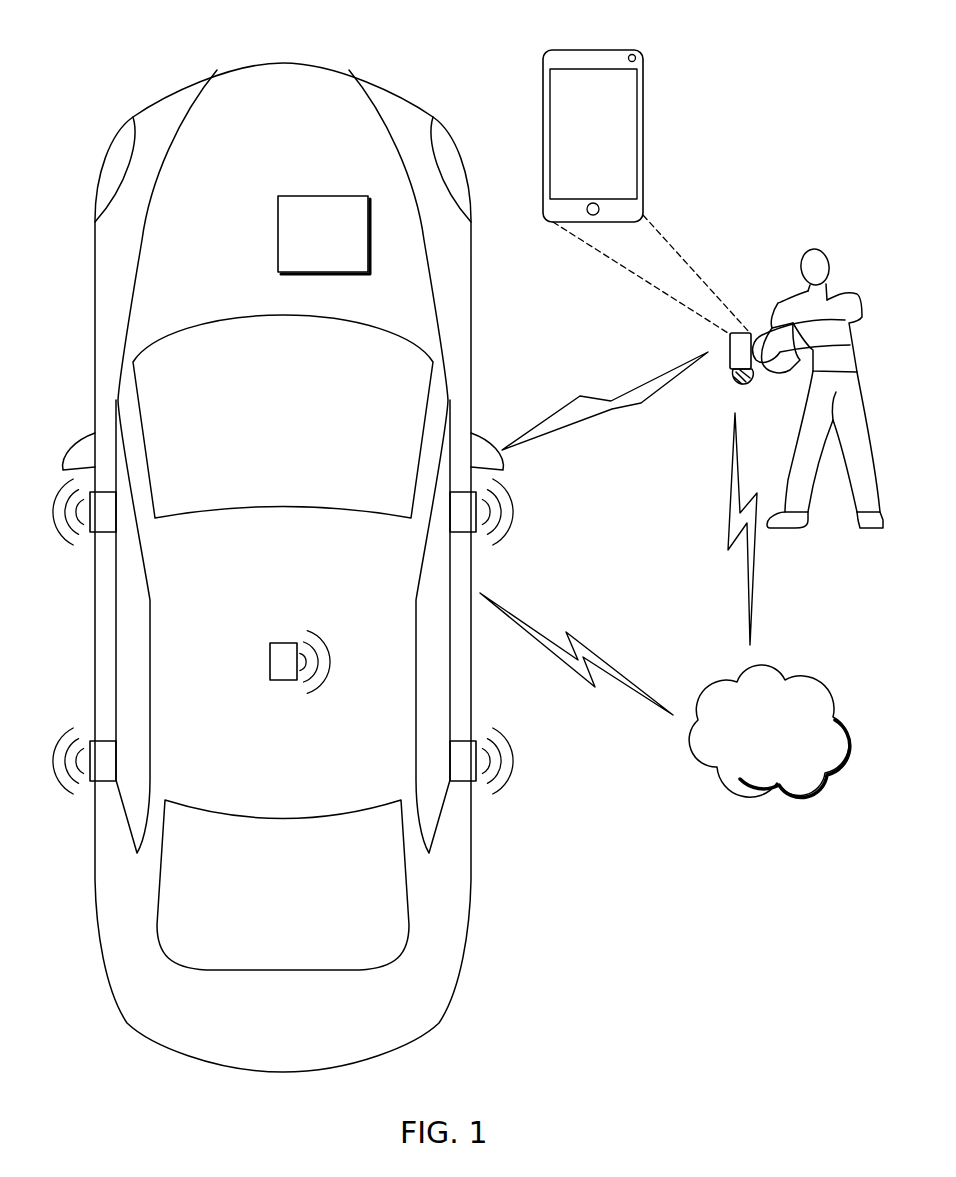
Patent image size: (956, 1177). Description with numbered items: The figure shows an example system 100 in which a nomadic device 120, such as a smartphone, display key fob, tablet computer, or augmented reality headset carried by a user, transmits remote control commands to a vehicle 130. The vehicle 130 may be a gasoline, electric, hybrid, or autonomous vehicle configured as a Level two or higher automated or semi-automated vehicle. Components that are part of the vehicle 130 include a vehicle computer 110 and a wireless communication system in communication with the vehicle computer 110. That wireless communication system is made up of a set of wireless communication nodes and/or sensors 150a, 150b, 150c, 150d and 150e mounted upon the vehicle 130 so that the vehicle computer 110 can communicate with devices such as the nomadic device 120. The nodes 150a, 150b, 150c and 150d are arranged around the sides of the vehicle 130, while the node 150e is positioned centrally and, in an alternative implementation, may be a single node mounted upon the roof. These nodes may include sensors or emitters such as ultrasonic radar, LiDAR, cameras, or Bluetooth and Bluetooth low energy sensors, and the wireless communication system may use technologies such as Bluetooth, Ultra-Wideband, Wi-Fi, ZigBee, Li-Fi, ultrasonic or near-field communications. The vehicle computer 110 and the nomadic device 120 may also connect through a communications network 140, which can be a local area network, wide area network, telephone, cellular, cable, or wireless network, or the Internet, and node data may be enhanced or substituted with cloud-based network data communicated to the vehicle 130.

The system 100 is at (735, 52).
The vehicle computer 110 is at (278, 232).
The nomadic device 120 is at (543, 135).
The vehicle 130 is at (116, 56).
The communications network 140 is at (790, 690).
The wireless communication node 150a is at (90, 532).
The wireless communication node 150b is at (90, 781).
The wireless communication node 150c is at (476, 532).
The wireless communication node 150d is at (476, 781).
The wireless communication node 150e is at (270, 661).